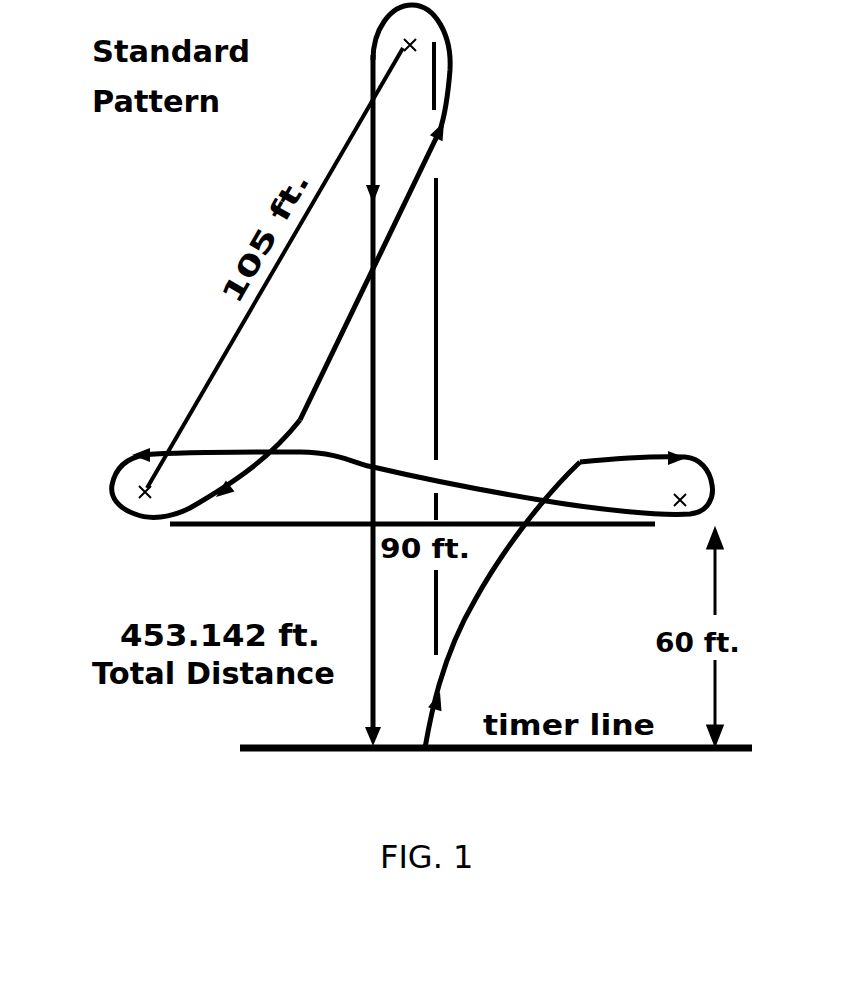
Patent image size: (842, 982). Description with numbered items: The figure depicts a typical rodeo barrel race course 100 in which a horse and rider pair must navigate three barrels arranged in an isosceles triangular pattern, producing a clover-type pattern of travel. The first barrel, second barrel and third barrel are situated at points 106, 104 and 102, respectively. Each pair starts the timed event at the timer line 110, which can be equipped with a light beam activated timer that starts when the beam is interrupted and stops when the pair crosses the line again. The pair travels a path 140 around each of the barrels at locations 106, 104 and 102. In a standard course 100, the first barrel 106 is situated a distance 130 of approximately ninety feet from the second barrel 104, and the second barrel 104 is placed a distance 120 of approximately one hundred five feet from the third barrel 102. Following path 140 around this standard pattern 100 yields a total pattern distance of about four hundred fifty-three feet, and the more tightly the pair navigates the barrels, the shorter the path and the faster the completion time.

The barrel race course 100 is at (666, 93).
The third barrel location 102 is at (430, 40).
The second barrel location 104 is at (140, 486).
The first barrel location 106 is at (685, 480).
The timer line 110 is at (280, 746).
The distance between second and third barrels 120 is at (330, 175).
The distance between first and second barrels 130 is at (295, 526).
The path 140 is at (575, 462).